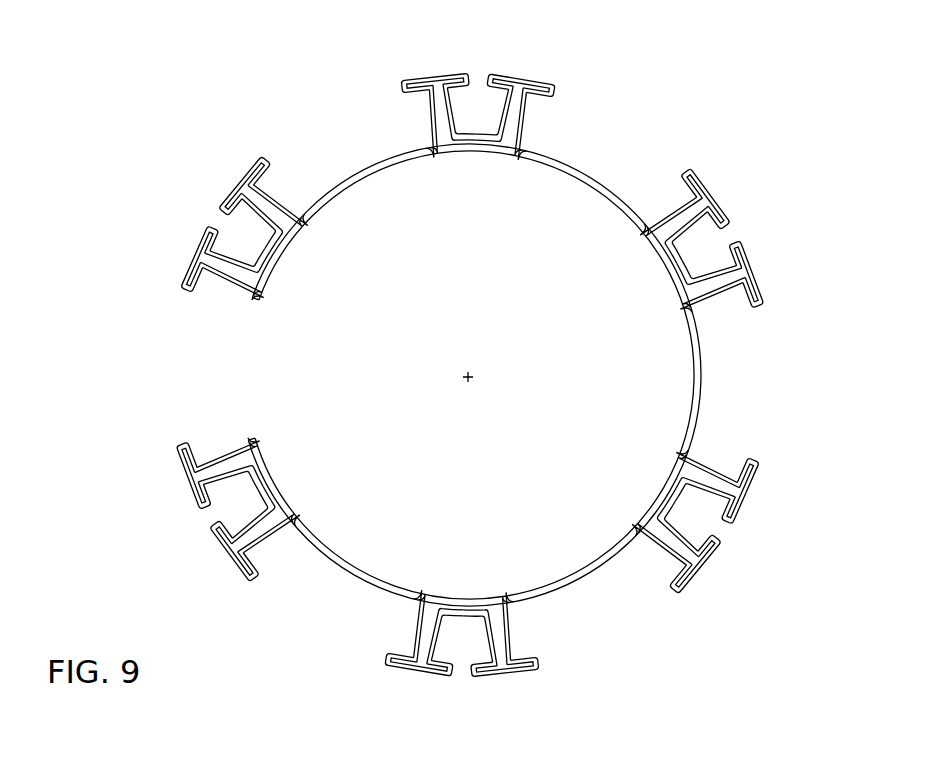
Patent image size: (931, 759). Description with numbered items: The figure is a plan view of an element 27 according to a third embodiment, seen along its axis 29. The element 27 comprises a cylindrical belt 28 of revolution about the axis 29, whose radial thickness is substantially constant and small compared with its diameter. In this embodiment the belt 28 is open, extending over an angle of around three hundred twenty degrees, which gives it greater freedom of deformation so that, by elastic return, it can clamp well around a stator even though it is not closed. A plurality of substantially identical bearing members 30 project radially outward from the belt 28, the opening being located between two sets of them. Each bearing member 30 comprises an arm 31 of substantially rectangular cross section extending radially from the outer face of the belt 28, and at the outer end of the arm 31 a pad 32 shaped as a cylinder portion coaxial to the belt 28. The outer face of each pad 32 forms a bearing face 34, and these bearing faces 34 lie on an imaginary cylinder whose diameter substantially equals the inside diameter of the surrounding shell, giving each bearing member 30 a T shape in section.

The element 27 is at (148, 264).
The belt 28 is at (602, 172).
The axis 29 is at (476, 384).
The bearing member 30 is at (725, 462).
The arm 31 is at (718, 296).
The pad 32 is at (686, 176).
The bearing face 34 is at (748, 272).